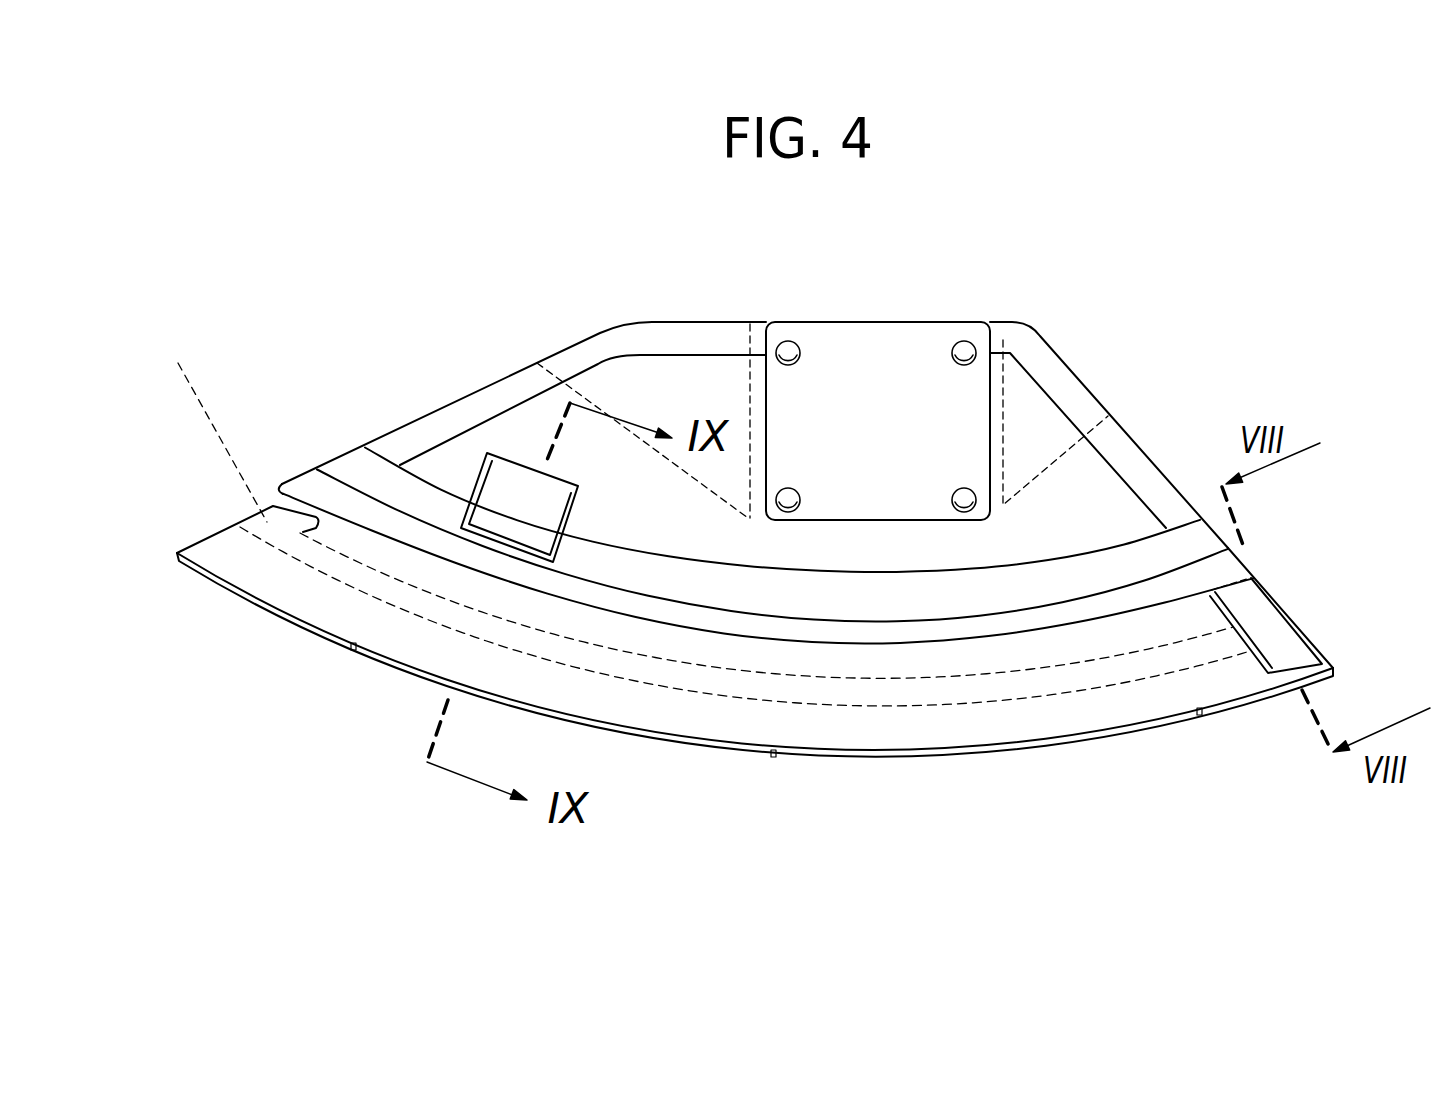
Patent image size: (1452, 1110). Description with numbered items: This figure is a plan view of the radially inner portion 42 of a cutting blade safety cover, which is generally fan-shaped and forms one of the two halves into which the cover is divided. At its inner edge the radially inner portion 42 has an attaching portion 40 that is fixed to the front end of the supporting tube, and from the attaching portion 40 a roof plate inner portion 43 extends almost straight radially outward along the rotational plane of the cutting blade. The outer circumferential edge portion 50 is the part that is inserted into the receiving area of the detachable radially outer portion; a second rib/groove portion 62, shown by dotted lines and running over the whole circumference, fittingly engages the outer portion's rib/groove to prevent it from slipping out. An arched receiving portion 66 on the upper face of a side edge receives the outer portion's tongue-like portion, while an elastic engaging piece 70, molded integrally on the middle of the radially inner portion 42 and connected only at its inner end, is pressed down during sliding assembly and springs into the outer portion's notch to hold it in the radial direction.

The attaching portion 40 is at (838, 348).
The radially inner portion 42 is at (1101, 366).
The roof plate inner portion 43 is at (365, 472).
The outer circumferential edge portion 50 is at (225, 550).
The second rib/groove portion 62 is at (307, 487).
The arched receiving portion 66 is at (1282, 632).
The elastic engaging piece 70 is at (503, 493).